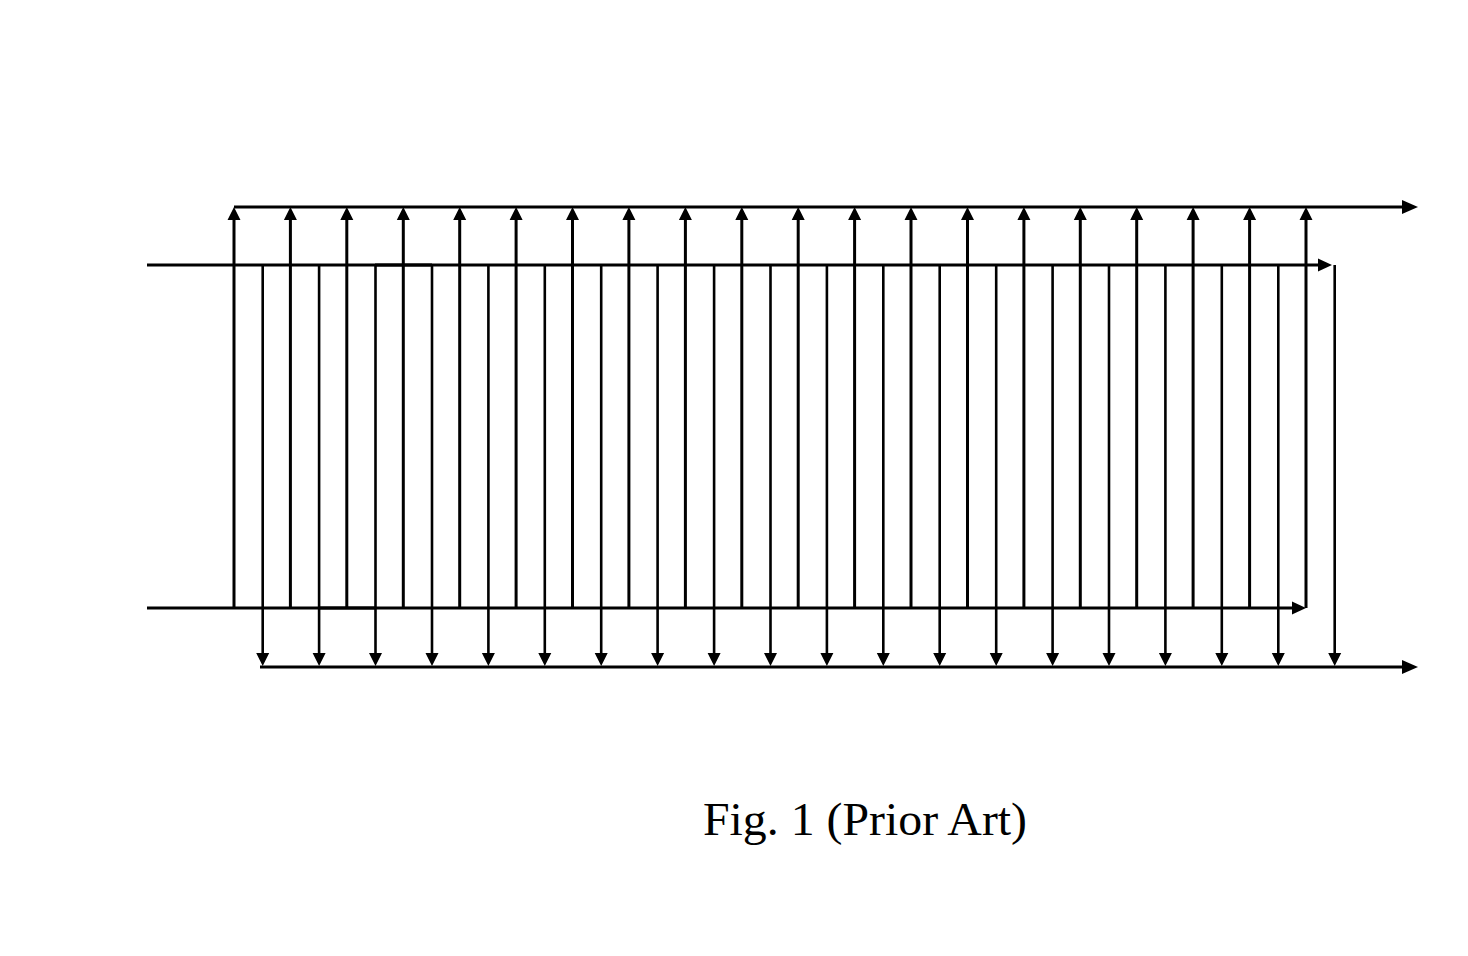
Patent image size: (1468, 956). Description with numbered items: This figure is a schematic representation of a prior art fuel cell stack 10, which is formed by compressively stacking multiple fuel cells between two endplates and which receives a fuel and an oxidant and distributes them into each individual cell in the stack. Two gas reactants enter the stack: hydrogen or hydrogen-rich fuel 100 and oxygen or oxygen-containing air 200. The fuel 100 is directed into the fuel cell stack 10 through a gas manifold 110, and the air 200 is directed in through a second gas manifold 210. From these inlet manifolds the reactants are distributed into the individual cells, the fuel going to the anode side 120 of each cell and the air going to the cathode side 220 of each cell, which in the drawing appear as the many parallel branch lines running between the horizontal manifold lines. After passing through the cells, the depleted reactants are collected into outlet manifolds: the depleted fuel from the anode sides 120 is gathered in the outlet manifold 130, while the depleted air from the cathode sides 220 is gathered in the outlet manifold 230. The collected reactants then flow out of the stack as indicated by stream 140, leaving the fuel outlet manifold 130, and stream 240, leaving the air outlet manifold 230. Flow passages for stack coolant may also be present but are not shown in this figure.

The fuel cell stack 10 is at (770, 120).
The hydrogen or hydrogen-rich fuel 100 is at (178, 263).
The gas manifold 110 is at (392, 263).
The anode side 120 is at (262, 379).
The outlet manifold 130 is at (530, 666).
The stream 140 is at (1378, 663).
The oxygen or oxygen-containing air 200 is at (187, 612).
The gas manifold 210 is at (360, 612).
The cathode side 220 is at (233, 493).
The outlet manifold 230 is at (762, 206).
The stream 240 is at (1365, 205).